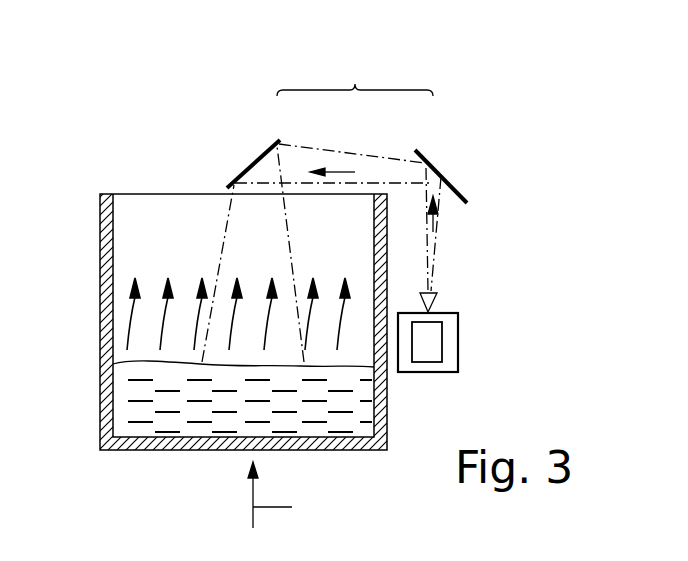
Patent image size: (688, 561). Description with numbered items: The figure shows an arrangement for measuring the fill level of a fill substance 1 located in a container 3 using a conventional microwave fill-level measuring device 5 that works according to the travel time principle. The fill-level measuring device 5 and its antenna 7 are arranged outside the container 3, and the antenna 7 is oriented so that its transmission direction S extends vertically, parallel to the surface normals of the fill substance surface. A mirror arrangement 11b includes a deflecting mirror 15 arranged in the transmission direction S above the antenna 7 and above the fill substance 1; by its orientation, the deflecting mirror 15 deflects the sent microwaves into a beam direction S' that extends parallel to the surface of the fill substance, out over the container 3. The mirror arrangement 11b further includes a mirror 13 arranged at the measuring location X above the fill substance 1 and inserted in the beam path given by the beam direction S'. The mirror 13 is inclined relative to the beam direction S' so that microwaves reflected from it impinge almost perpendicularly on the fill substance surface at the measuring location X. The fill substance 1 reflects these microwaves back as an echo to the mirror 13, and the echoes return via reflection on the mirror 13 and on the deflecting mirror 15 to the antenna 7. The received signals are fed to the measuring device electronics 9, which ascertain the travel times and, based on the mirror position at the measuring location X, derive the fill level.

The fill substance 1 is at (125, 409).
The container 3 is at (100, 287).
The fill-level measuring device 5 is at (448, 343).
The antenna 7 is at (440, 298).
The measuring device electronics 9 is at (436, 356).
The mirror arrangement 11b is at (355, 75).
The mirror 13 is at (252, 165).
The deflecting mirror 15 is at (440, 175).
The transmission direction S is at (460, 222).
The beam direction S' is at (337, 138).
The measuring location X is at (279, 495).